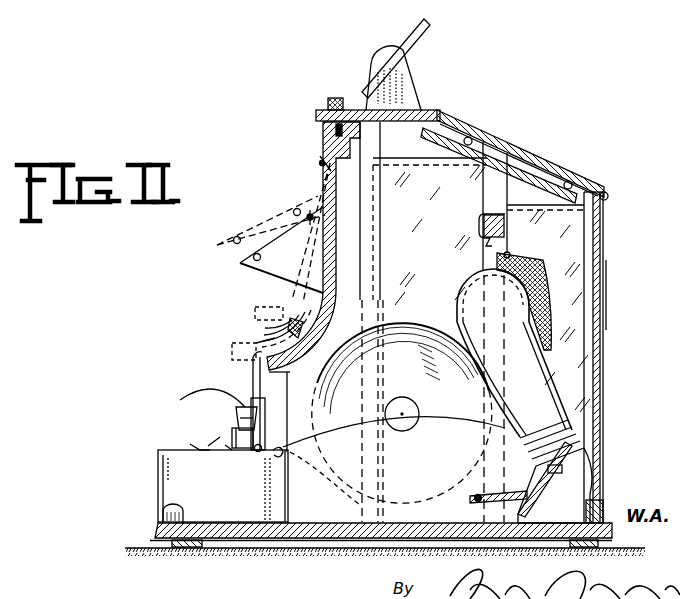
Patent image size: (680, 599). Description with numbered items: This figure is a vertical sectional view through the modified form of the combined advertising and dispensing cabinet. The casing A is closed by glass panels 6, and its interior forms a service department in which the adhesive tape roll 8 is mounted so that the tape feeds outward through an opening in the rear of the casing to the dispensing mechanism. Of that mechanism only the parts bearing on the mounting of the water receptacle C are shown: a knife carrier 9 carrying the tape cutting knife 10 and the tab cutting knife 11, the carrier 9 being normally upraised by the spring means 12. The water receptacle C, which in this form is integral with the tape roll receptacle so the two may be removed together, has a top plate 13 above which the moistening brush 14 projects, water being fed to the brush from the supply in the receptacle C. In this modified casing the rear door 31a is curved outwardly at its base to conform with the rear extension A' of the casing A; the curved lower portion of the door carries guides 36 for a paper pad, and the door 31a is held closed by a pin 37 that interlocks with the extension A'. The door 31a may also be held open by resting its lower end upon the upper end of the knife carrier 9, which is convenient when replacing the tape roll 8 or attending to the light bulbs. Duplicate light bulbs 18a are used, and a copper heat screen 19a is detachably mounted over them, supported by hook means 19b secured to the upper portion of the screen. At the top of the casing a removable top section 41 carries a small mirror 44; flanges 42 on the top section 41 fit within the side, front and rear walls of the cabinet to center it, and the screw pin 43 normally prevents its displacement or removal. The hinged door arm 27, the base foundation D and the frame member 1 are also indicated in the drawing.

The cabinet 1 is at (612, 312).
The glass panels 6 is at (462, 178).
The adhesive tape roll 8 is at (408, 333).
The knife carrier 9 is at (265, 402).
The tape cutting knife 10 is at (197, 403).
The tab cutting knife 11 is at (245, 412).
The spring means 12 is at (247, 455).
The top plate 13 is at (207, 453).
The moistening brush 14 is at (205, 445).
The duplicate light bulbs 18a is at (537, 377).
The copper heat screen 19a is at (552, 275).
The hook means 19b is at (507, 230).
The arm 27 is at (240, 266).
The rear door 31a is at (217, 245).
The guides 36 is at (234, 345).
The pin 37 is at (288, 322).
The top section 41 is at (448, 122).
The flanges 42 is at (358, 133).
The screw pin 43 is at (328, 104).
The mirror 44 is at (430, 30).
The casing A is at (456, 322).
The rear extension A' is at (242, 406).
The water receptacle C is at (240, 510).
The foundation D is at (297, 527).